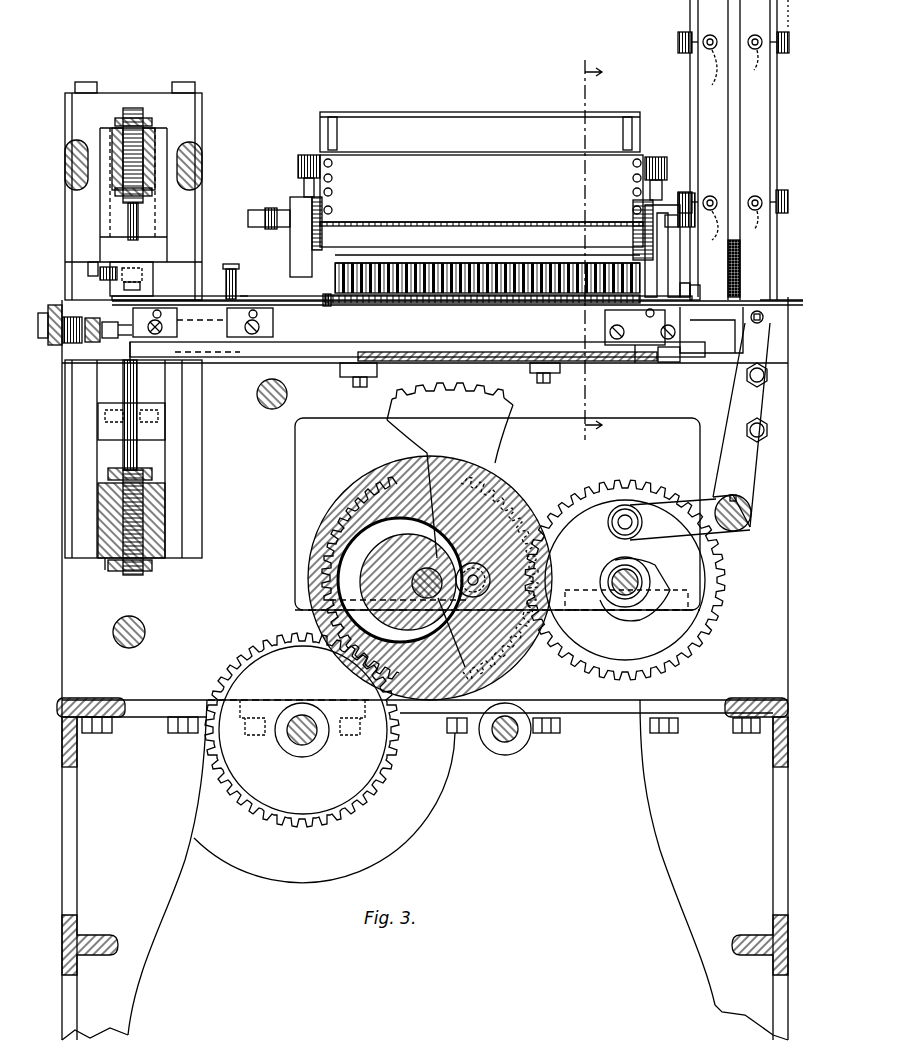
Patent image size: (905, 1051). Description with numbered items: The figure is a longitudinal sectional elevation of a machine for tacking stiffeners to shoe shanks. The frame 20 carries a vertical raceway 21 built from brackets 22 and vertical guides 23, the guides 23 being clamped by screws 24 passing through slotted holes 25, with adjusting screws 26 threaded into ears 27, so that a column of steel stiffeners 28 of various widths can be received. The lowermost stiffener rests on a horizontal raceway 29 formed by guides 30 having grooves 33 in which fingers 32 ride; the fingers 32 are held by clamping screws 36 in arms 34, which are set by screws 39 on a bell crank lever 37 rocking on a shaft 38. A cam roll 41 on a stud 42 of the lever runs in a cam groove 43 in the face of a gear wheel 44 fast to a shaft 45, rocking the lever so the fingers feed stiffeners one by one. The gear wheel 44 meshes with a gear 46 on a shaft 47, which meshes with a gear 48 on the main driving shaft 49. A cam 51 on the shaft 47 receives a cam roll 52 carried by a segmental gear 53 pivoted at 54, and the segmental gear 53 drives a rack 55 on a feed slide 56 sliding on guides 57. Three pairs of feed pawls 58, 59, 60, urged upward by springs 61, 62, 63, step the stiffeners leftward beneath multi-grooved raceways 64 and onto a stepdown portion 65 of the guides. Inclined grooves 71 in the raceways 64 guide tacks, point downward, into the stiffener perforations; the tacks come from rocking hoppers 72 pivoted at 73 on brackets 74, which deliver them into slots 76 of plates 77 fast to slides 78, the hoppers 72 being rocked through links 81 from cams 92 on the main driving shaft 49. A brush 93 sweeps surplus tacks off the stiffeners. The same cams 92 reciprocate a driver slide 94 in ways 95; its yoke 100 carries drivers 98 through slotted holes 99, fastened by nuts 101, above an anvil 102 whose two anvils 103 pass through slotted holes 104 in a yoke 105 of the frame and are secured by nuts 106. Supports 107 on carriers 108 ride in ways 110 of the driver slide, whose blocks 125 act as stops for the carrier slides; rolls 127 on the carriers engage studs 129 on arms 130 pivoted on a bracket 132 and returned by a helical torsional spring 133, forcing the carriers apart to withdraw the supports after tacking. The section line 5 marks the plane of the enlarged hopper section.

The section line 5 is at (587, 246).
The frame 20 is at (295, 440).
The vertical raceway 21 is at (782, 150).
The brackets 22 is at (770, 97).
The vertical guides 23 is at (690, 83).
The screws 24 is at (710, 35).
The slotted holes 25 is at (715, 148).
The adjusting screws 26 is at (678, 43).
The ears 27 is at (683, 32).
The steel stiffeners 28 is at (742, 262).
The horizontal raceway 29 is at (402, 286).
The guides 30 is at (717, 353).
The fingers 32 is at (796, 300).
The grooves 33 is at (707, 293).
The arms 34 is at (760, 343).
The clamping screws 36 is at (765, 317).
The bell crank lever 37 is at (740, 490).
The shaft 38 is at (742, 525).
The screws 39 is at (767, 375).
The cam roll 41 is at (630, 537).
The stud 42 is at (642, 522).
The cam groove 43 is at (592, 518).
The gear wheel 44 is at (637, 485).
The shaft 45 is at (625, 596).
The gear 46 is at (340, 525).
The shaft 47 is at (427, 598).
The gear 48 is at (385, 778).
The main driving shaft 49 is at (302, 714).
The cam 51 is at (500, 505).
The cam roll 52 is at (470, 565).
The segmental gear 53 is at (490, 453).
The pivot 54 is at (505, 745).
The rack 55 is at (385, 392).
The feed slide 56 is at (332, 342).
The guides 57 is at (598, 363).
The feed pawls 58 is at (635, 345).
The feed pawls 59 is at (240, 300).
The feed pawls 60 is at (130, 292).
The springs 61 is at (608, 332).
The springs 62 is at (232, 324).
The springs 63 is at (185, 351).
The multi-grooved raceways 64 is at (537, 275).
The stepdown portion 65 is at (328, 305).
The inclined grooves 71 is at (455, 272).
The rocking hoppers 72 is at (455, 130).
The pivots 73 is at (632, 215).
The brackets 74 is at (290, 215).
The slots 76 is at (485, 222).
The plates 77 is at (400, 222).
The slides 78 is at (510, 250).
The links 81 is at (300, 166).
The cams 92 is at (420, 813).
The brush 93 is at (230, 272).
The driver slide 94 is at (185, 150).
The ways 95 is at (100, 460).
The drivers 98 is at (135, 112).
The slotted holes 99 is at (115, 145).
The yoke 100 is at (123, 180).
The nuts 101 is at (130, 116).
The anvil 102 is at (150, 565).
The anvils 103 is at (135, 400).
The slotted holes 104 is at (105, 560).
The cross piece or yoke 105 is at (112, 520).
The nuts 106 is at (152, 474).
The supports 107 is at (130, 310).
The carriers 108 is at (118, 264).
The ways 110 is at (110, 245).
The blocks 125 is at (100, 440).
The rolls 127 is at (90, 305).
The studs 129 is at (105, 340).
The arms 130 is at (92, 345).
The bracket 132 is at (55, 346).
The helical torsional spring 133 is at (72, 345).